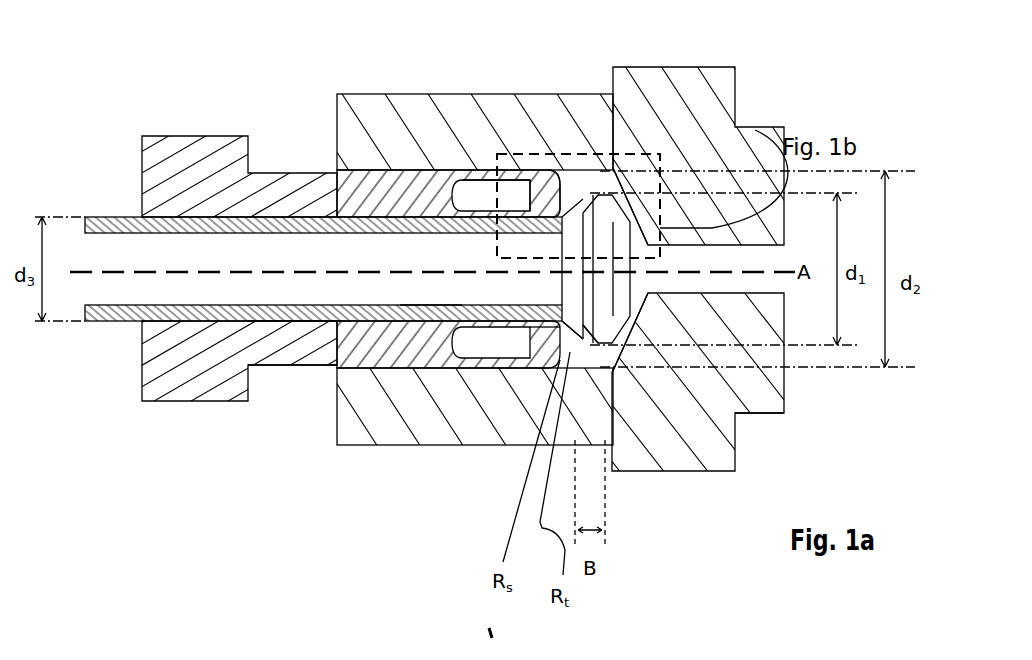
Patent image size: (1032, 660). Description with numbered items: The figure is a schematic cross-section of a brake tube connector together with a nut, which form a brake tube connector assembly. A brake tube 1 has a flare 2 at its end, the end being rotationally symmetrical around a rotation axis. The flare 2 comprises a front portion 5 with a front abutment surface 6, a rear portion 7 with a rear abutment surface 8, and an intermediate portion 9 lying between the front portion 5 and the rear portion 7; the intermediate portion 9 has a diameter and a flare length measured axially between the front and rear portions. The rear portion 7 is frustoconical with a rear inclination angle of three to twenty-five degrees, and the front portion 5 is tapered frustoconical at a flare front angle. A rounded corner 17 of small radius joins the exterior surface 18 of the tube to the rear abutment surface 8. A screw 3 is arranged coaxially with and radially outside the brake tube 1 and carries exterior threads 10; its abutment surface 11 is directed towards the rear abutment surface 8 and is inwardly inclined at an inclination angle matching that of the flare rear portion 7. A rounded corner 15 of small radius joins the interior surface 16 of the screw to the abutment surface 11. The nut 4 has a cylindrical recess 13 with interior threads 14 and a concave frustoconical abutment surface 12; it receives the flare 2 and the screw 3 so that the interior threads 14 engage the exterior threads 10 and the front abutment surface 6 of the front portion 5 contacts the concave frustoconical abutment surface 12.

The brake tube 1 is at (258, 198).
The flare 2 is at (580, 205).
The screw 3 is at (312, 178).
The nut 4 is at (470, 160).
The front portion 5 is at (614, 420).
The front abutment surface 6 is at (665, 153).
The rear portion 7 is at (576, 350).
The rear abutment surface 8 is at (557, 210).
The intermediate portion 9 is at (605, 432).
The exterior threads 10 is at (302, 372).
The abutment surface 11 is at (548, 327).
The concave frustoconical abutment surface 12 is at (738, 418).
The cylindrical recess 13 is at (448, 192).
The interior threads 14 is at (345, 340).
The rounded corner 15 is at (553, 367).
The interior surface 16 is at (465, 300).
The rounded corner 17 is at (567, 355).
The exterior surface 18 is at (540, 186).